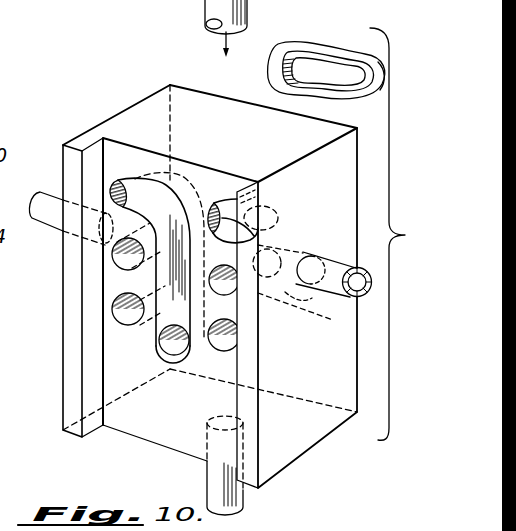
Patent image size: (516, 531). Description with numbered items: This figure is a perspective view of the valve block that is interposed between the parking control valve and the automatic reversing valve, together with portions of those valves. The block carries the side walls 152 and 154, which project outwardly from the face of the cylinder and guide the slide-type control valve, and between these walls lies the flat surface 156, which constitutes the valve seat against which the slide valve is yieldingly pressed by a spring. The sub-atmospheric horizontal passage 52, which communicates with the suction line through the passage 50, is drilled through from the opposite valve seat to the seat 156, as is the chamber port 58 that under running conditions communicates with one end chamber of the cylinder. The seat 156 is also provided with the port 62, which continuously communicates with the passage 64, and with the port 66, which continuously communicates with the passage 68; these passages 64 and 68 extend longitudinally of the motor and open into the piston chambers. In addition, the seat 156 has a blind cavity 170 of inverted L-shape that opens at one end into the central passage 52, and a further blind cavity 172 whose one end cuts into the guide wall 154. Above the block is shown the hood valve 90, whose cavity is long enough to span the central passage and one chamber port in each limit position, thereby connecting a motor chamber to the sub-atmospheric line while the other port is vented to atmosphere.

The passage 50 is at (249, 16).
The horizontal passage 52 is at (174, 362).
The chamber port 58 is at (115, 318).
The passage 62 is at (143, 243).
The passage 64 is at (52, 221).
The passage 66 is at (150, 342).
The passage 68 is at (362, 298).
The hood valve 90 is at (318, 44).
The side wall 152 is at (85, 150).
The side wall 154 is at (262, 193).
The flat surface 156 is at (190, 173).
The blind cavity 170 is at (133, 178).
The blind cavity 172 is at (234, 199).